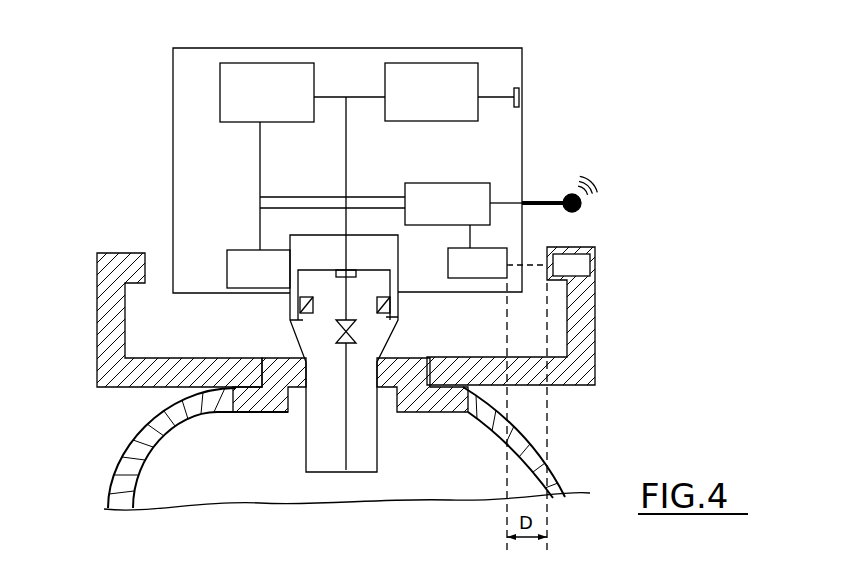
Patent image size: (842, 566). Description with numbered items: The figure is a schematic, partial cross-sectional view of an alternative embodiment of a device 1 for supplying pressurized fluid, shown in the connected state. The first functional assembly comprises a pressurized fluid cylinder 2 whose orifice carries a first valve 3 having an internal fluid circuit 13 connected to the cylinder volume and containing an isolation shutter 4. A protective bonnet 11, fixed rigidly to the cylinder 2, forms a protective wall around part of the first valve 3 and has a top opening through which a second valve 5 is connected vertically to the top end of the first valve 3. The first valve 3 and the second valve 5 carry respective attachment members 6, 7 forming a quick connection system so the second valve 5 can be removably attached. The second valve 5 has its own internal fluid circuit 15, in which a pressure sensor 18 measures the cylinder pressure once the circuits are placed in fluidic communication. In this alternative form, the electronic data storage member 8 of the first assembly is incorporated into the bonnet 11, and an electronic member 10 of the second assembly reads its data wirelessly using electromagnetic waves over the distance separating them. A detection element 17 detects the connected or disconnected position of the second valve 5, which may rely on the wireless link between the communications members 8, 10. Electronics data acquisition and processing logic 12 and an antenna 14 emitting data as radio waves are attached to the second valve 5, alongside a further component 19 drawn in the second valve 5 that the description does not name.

The device 1 is at (645, 364).
The pressurized fluid cylinder 2 is at (562, 488).
The first valve 3 is at (318, 332).
The isolation shutter 4 is at (341, 343).
The second valve 5 is at (203, 180).
The attachment member 6 is at (313, 288).
The attachment member 7 is at (312, 290).
The electronic data storage member 8 is at (583, 264).
The electronic member 10 is at (500, 257).
The protective bonnet 11 is at (573, 318).
The electronics data acquisition and processing logic 12 is at (472, 198).
The internal fluid circuit 13 is at (333, 453).
The antenna 14 is at (543, 196).
The internal fluid circuit 15 is at (347, 152).
The detection element 17 is at (222, 263).
The pressure sensor 18 is at (263, 84).
The energy store 19 is at (455, 75).